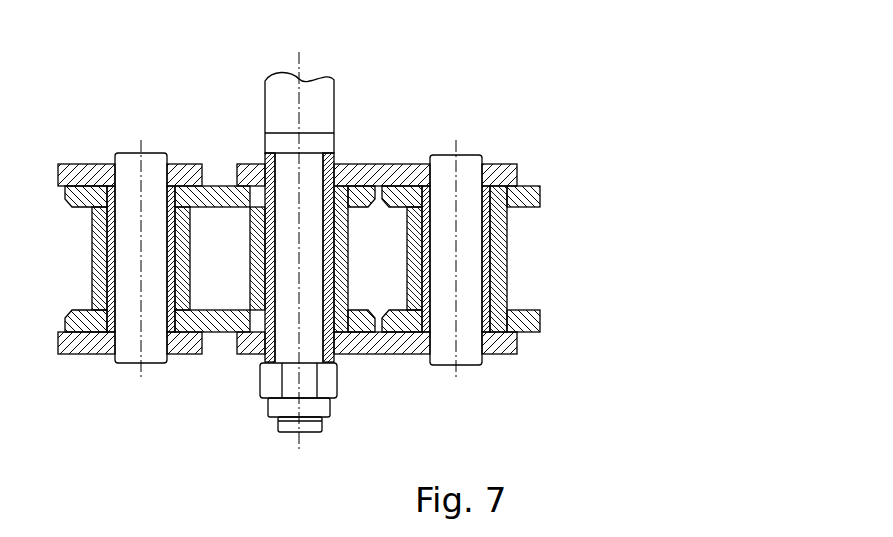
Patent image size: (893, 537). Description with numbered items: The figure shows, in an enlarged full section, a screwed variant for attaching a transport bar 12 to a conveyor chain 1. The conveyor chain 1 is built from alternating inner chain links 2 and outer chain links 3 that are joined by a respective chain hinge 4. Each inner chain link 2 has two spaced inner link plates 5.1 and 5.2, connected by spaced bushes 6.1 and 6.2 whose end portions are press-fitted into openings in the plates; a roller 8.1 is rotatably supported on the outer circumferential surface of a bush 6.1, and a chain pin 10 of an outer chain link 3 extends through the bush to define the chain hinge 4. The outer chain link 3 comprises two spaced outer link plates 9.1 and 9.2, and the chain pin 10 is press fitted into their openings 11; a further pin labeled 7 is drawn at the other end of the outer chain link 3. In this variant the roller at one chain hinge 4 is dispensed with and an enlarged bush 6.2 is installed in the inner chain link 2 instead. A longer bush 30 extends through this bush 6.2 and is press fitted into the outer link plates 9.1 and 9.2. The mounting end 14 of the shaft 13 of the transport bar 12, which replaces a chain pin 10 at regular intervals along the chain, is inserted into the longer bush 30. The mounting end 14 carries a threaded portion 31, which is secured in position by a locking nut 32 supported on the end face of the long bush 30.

The conveyor chain 1 is at (297, 243).
The inner chain link 2 is at (297, 257).
The outer chain link 3 is at (377, 253).
The chain hinge 4 is at (130, 265).
The inner link plate 5.1 is at (229, 195).
The inner link plate 5.2 is at (220, 325).
The bush 6.1 is at (93, 232).
The bush 6.2 is at (305, 259).
The chain pin 7 is at (430, 195).
The roller 8.1 is at (98, 280).
The outer link plate 9.1 is at (405, 175).
The outer link plate 9.2 is at (408, 340).
The chain pin 10 is at (135, 223).
The opening 11 is at (127, 162).
The transport bar 12 is at (287, 243).
The shaft 13 is at (322, 87).
The mounting end 14 is at (258, 250).
The longer bush 30 is at (262, 343).
The threaded portion 31 is at (280, 425).
The locking nut 32 is at (333, 382).